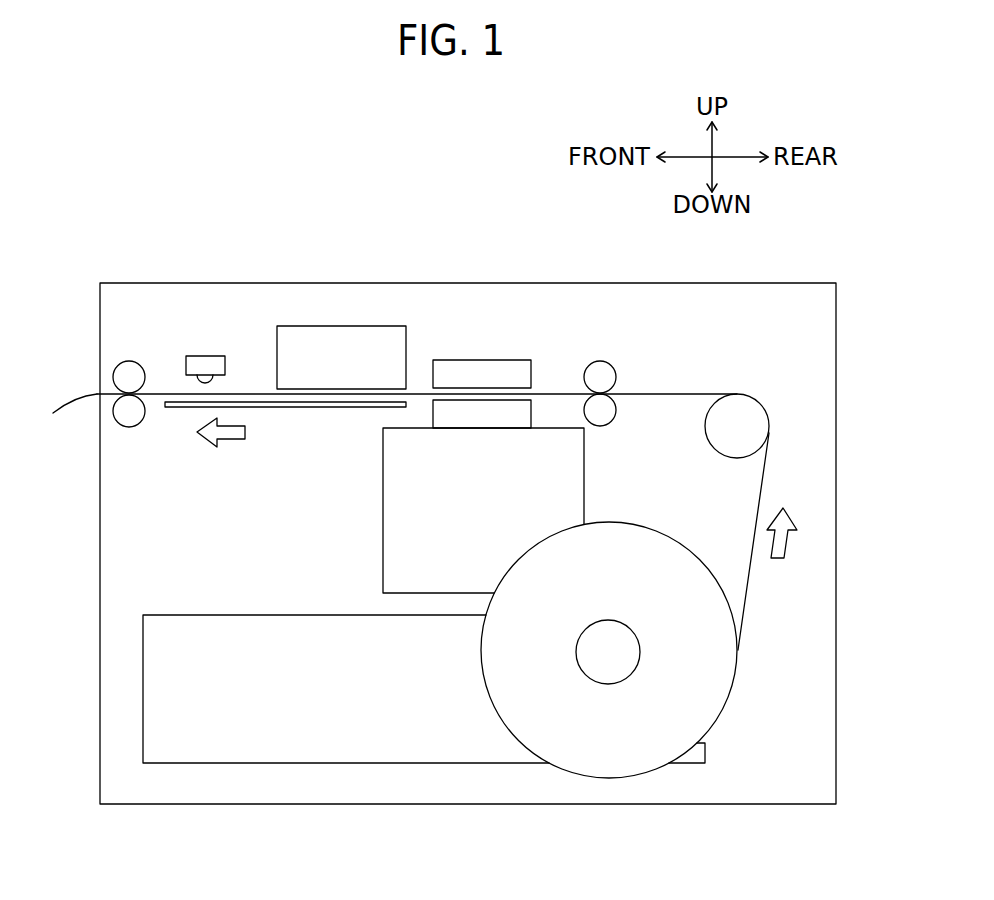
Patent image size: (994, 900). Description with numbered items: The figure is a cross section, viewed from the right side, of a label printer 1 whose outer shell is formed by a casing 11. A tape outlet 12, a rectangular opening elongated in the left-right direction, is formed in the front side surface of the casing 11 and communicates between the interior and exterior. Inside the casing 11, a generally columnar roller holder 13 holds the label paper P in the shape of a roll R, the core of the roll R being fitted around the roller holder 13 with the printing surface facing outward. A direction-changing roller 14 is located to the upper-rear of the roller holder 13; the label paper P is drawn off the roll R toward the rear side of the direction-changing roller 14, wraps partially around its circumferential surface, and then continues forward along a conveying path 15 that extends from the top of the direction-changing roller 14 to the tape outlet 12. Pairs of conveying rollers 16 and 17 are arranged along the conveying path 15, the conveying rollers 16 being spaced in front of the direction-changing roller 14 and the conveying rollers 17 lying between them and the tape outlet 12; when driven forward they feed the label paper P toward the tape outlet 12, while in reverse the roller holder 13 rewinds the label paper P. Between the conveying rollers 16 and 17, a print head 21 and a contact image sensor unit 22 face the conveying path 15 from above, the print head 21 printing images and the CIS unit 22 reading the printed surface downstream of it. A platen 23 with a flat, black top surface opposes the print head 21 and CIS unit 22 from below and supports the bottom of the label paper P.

The label printer 1 is at (458, 869).
The casing 11 is at (836, 737).
The tape outlet 12 is at (95, 389).
The roller holder 13 is at (617, 675).
The direction-changing roller 14 is at (752, 403).
The conveying path 15 is at (269, 398).
The conveying rollers 16 is at (613, 405).
The conveying rollers 17 is at (144, 405).
The print head 21 is at (483, 369).
The contact image sensor unit 22 is at (206, 357).
The platen 23 is at (328, 409).
The label paper P is at (701, 392).
The roll R is at (485, 697).